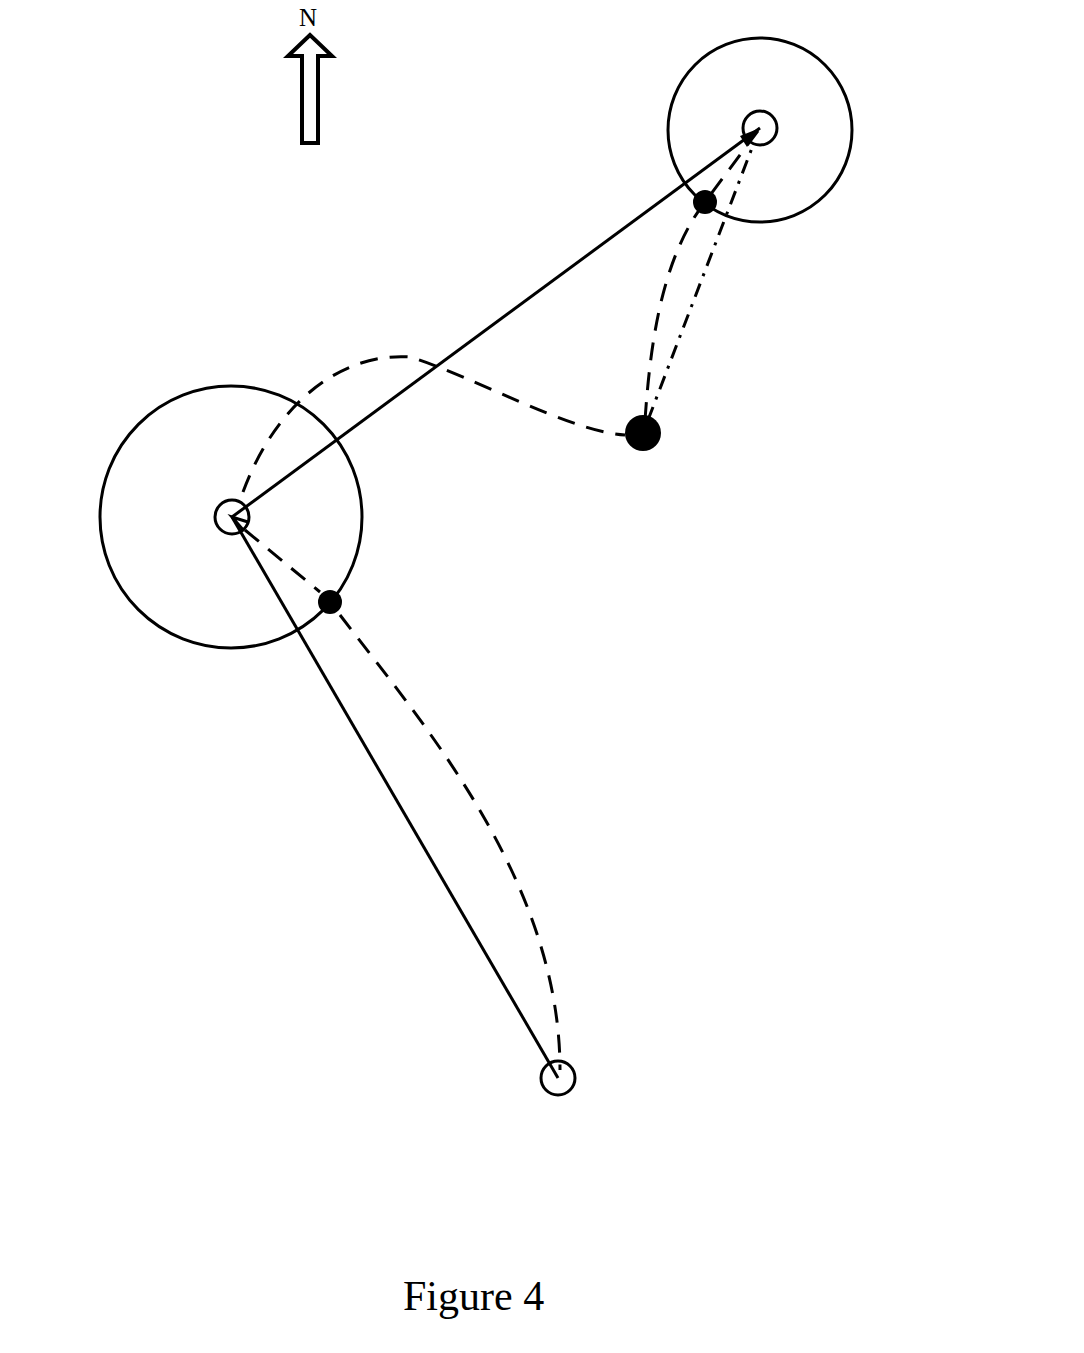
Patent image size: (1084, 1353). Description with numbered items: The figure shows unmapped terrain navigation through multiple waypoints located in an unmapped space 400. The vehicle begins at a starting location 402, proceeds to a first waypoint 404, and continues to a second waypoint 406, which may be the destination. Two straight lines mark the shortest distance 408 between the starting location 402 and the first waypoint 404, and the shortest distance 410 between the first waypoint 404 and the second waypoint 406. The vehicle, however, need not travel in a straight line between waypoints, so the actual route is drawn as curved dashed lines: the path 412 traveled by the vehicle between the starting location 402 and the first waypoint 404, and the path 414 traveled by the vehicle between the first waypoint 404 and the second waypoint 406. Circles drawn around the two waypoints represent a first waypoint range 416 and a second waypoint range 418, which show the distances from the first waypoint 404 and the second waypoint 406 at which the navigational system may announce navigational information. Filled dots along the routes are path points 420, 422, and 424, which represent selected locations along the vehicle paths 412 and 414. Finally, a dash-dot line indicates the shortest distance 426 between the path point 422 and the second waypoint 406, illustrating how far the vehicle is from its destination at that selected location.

The unmapped space 400 is at (828, 1148).
The starting location 402 is at (576, 1078).
The first waypoint 404 is at (216, 505).
The second waypoint 406 is at (767, 143).
The shortest distance 408 is at (346, 724).
The shortest distance 410 is at (497, 318).
The path traveled by the vehicle 412 is at (467, 778).
The path traveled by the vehicle 414 is at (555, 427).
The first waypoint range 416 is at (118, 592).
The second waypoint range 418 is at (858, 130).
The path point 420 is at (343, 600).
The path point 422 is at (662, 433).
The path point 424 is at (692, 203).
The shortest distance 426 is at (688, 320).